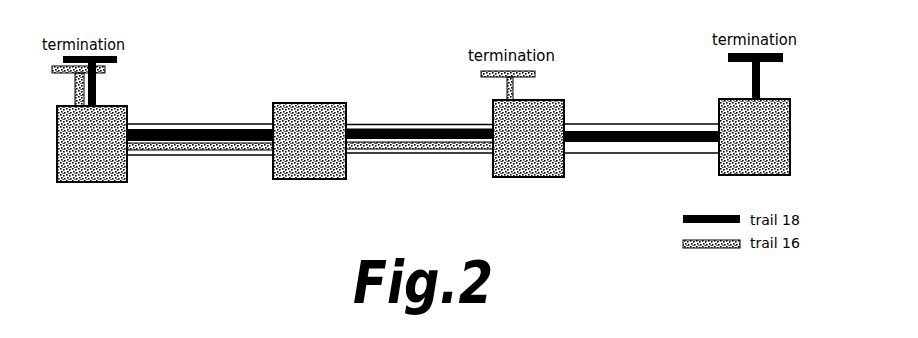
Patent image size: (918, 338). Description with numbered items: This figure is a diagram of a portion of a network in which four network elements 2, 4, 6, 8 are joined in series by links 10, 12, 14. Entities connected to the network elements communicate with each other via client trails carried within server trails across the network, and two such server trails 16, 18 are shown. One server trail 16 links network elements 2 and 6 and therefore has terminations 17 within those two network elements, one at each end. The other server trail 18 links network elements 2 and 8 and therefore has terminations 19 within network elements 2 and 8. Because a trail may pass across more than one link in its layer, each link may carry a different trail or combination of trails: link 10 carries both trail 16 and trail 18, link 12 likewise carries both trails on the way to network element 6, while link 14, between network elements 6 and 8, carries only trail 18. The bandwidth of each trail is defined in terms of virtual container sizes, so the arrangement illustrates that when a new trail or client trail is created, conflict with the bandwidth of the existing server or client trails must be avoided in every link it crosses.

The network element 2 is at (83, 182).
The network element 4 is at (300, 179).
The network element 6 is at (517, 177).
The network element 8 is at (733, 175).
The link 10 is at (138, 158).
The link 12 is at (365, 155).
The link 14 is at (633, 155).
The server trail 16 is at (185, 152).
The termination 17 is at (73, 79).
The server trail 18 is at (185, 135).
The termination 19 is at (97, 93).